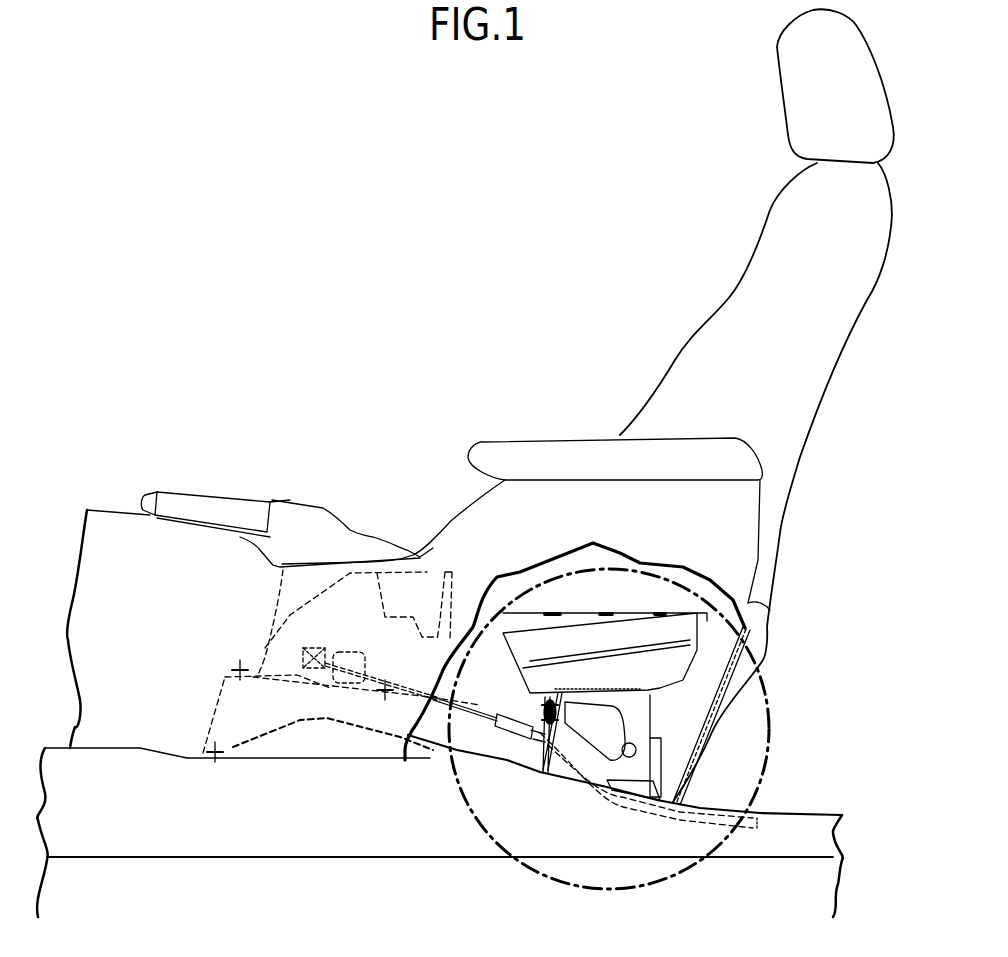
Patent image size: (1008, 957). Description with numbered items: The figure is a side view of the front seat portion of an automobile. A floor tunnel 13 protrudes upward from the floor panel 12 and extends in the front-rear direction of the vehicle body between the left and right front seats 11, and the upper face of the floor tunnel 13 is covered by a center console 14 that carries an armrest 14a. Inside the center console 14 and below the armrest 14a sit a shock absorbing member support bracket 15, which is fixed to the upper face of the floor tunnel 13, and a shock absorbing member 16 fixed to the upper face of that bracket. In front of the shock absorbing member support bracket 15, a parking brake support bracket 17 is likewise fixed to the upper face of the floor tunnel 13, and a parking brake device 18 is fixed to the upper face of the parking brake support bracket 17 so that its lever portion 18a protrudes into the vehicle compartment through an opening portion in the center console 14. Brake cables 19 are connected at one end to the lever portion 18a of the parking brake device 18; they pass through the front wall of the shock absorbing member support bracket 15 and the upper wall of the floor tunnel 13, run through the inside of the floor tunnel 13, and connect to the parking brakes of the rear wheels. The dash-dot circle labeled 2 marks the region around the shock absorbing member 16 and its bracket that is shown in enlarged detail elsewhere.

The detail region of FIG. 2 is at (512, 602).
The front seat 11 is at (680, 338).
The floor panel 12 is at (348, 850).
The floor tunnel 13 is at (127, 748).
The center console 14 is at (438, 536).
The armrest 14a is at (552, 452).
The shock absorbing member support bracket 15 is at (665, 765).
The shock absorbing member 16 is at (632, 612).
The parking brake support bracket 17 is at (457, 730).
The parking brake device 18 is at (322, 502).
The lever portion 18a is at (205, 500).
The brake cable 19 is at (513, 717).